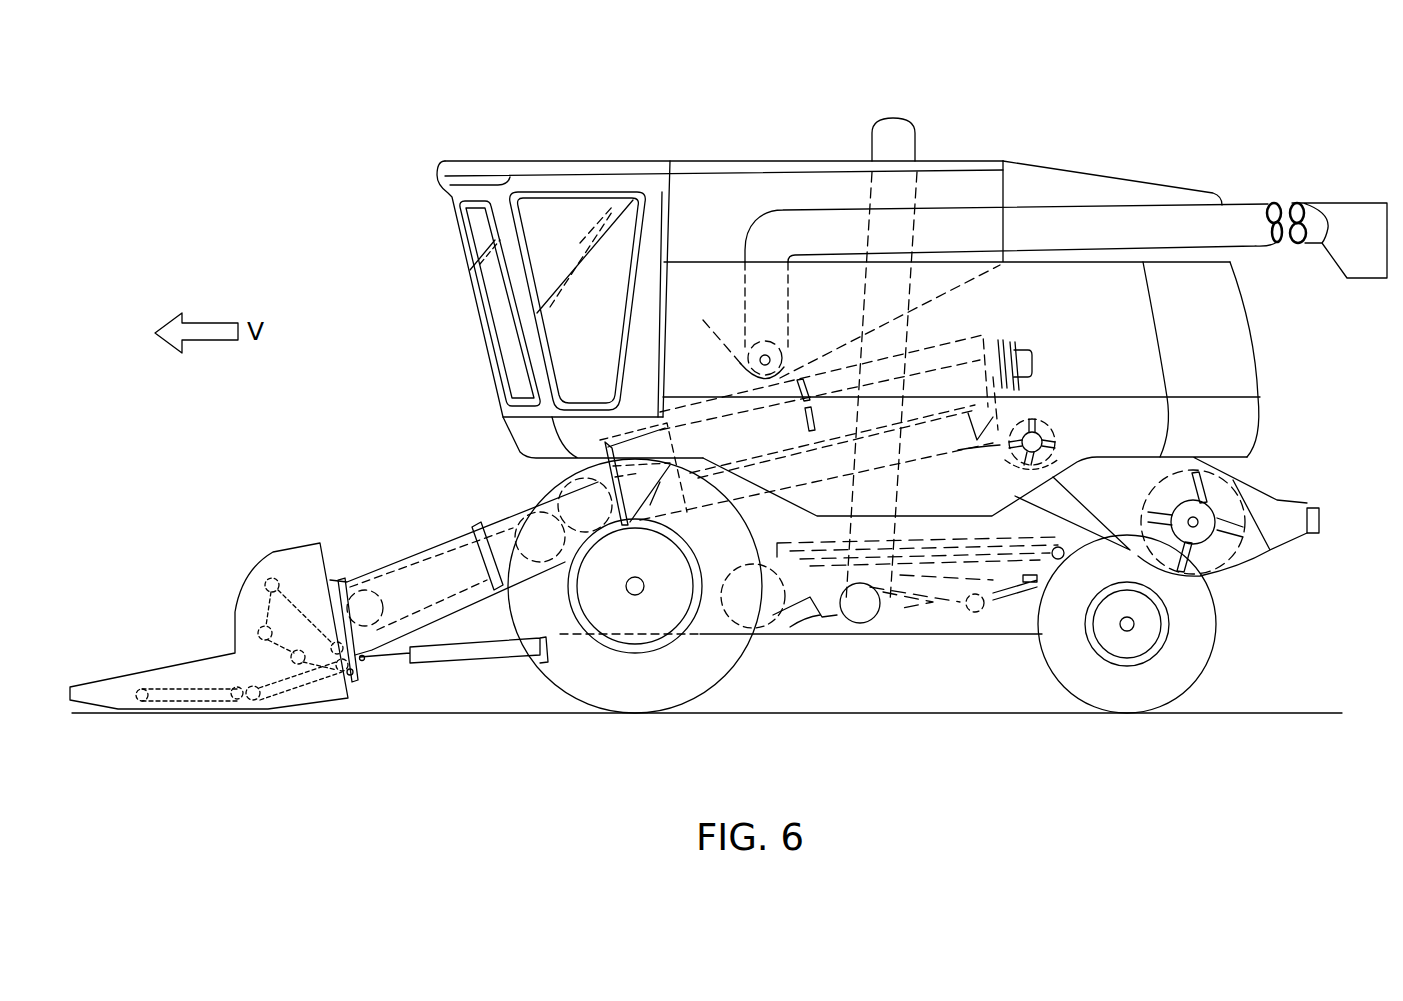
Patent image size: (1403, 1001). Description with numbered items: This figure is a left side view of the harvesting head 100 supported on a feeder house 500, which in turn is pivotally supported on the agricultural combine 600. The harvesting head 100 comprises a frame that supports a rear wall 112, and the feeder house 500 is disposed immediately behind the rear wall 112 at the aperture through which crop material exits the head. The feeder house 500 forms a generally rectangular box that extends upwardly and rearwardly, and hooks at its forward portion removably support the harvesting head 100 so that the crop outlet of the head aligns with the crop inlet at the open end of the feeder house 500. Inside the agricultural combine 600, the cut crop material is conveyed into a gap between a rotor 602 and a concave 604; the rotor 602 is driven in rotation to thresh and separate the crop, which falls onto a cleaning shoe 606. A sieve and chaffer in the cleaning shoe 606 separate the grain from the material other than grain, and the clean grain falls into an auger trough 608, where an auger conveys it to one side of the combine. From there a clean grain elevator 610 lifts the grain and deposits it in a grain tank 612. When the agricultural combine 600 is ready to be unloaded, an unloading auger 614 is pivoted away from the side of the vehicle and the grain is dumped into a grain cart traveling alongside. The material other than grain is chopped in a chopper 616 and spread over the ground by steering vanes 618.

The harvesting head 100 is at (187, 552).
The rear wall 112 is at (327, 557).
The feeder house 500 is at (402, 463).
The agricultural combine 600 is at (370, 237).
The rotor 602 is at (950, 340).
The concave 604 is at (1003, 440).
The cleaning shoe 606 is at (813, 610).
The auger trough 608 is at (853, 633).
The clean grain elevator 610 is at (898, 120).
The grain tank 612 is at (760, 161).
The unloading auger 614 is at (1088, 205).
The chopper 616 is at (1235, 473).
The steering vanes 618 is at (1319, 520).